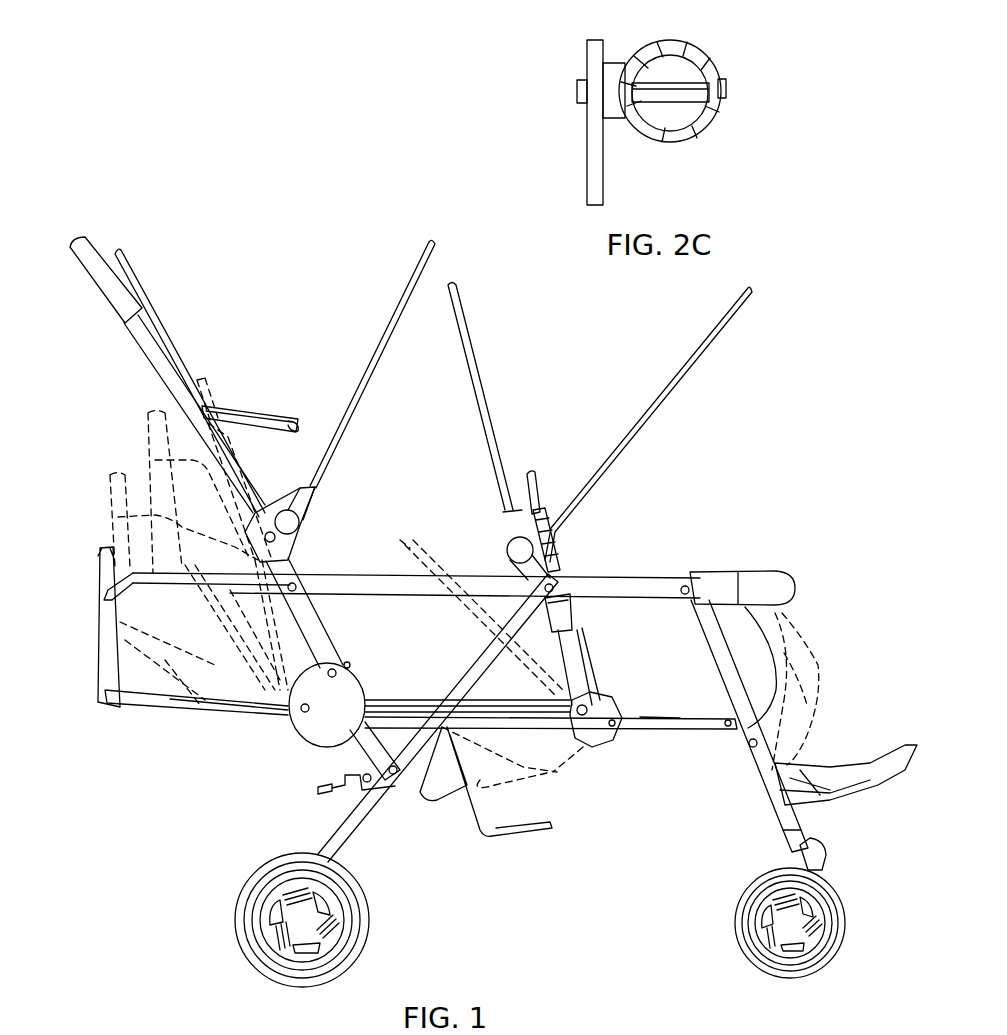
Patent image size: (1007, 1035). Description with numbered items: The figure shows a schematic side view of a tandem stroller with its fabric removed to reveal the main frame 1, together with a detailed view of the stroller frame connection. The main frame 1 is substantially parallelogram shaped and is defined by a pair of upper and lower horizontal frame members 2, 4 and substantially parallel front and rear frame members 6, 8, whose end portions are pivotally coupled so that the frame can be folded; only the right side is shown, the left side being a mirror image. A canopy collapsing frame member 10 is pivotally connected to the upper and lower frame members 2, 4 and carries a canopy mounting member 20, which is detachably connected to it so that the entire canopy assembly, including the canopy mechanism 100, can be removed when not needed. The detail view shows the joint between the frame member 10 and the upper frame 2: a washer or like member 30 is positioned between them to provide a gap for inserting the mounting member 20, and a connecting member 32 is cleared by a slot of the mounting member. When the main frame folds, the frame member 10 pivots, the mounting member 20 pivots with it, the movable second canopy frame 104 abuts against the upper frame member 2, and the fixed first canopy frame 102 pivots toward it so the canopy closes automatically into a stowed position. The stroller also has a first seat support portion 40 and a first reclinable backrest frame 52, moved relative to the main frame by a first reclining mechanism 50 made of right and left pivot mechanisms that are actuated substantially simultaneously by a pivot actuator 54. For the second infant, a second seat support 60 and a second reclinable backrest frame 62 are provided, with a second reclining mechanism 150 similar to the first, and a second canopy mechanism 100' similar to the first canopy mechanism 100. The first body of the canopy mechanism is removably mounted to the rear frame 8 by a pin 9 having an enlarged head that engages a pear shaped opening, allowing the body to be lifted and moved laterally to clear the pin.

In FIG. 1, the main frame 1 is at (630, 757).
In FIG. 2C, the upper horizontal frame member 2 is at (690, 58).
In FIG. 1, the upper horizontal frame member 2 is at (603, 587).
In FIG. 1, the lower horizontal frame member 4 is at (678, 727).
In FIG. 1, the front frame member 6 is at (713, 655).
In FIG. 1, the rear frame member 8 is at (312, 628).
In FIG. 1, the pin 9 is at (275, 538).
In FIG. 2C, the canopy collapsing frame member 10 is at (587, 185).
In FIG. 1, the canopy collapsing frame member 10 is at (588, 670).
In FIG. 1, the canopy mounting member 20 is at (567, 608).
In FIG. 2C, the washer 30 is at (617, 118).
In FIG. 2C, the connecting member 32 is at (577, 90).
In FIG. 1, the first seat support portion 40 is at (650, 713).
In FIG. 1, the first reclining mechanism 50 is at (597, 758).
In FIG. 1, the first reclinable backrest frame 52 is at (536, 482).
In FIG. 1, the pivot actuator 54 is at (548, 548).
In FIG. 1, the second seat support 60 is at (400, 697).
In FIG. 1, the second reclinable backrest frame 62 is at (162, 700).
In FIG. 1, the first canopy mechanism 100 is at (490, 529).
In FIG. 1, the second canopy mechanism 100' is at (325, 503).
In FIG. 1, the first canopy frame 102 is at (142, 283).
In FIG. 1, the second canopy frame 104 is at (422, 257).
In FIG. 1, the second reclining mechanism 150 is at (273, 727).